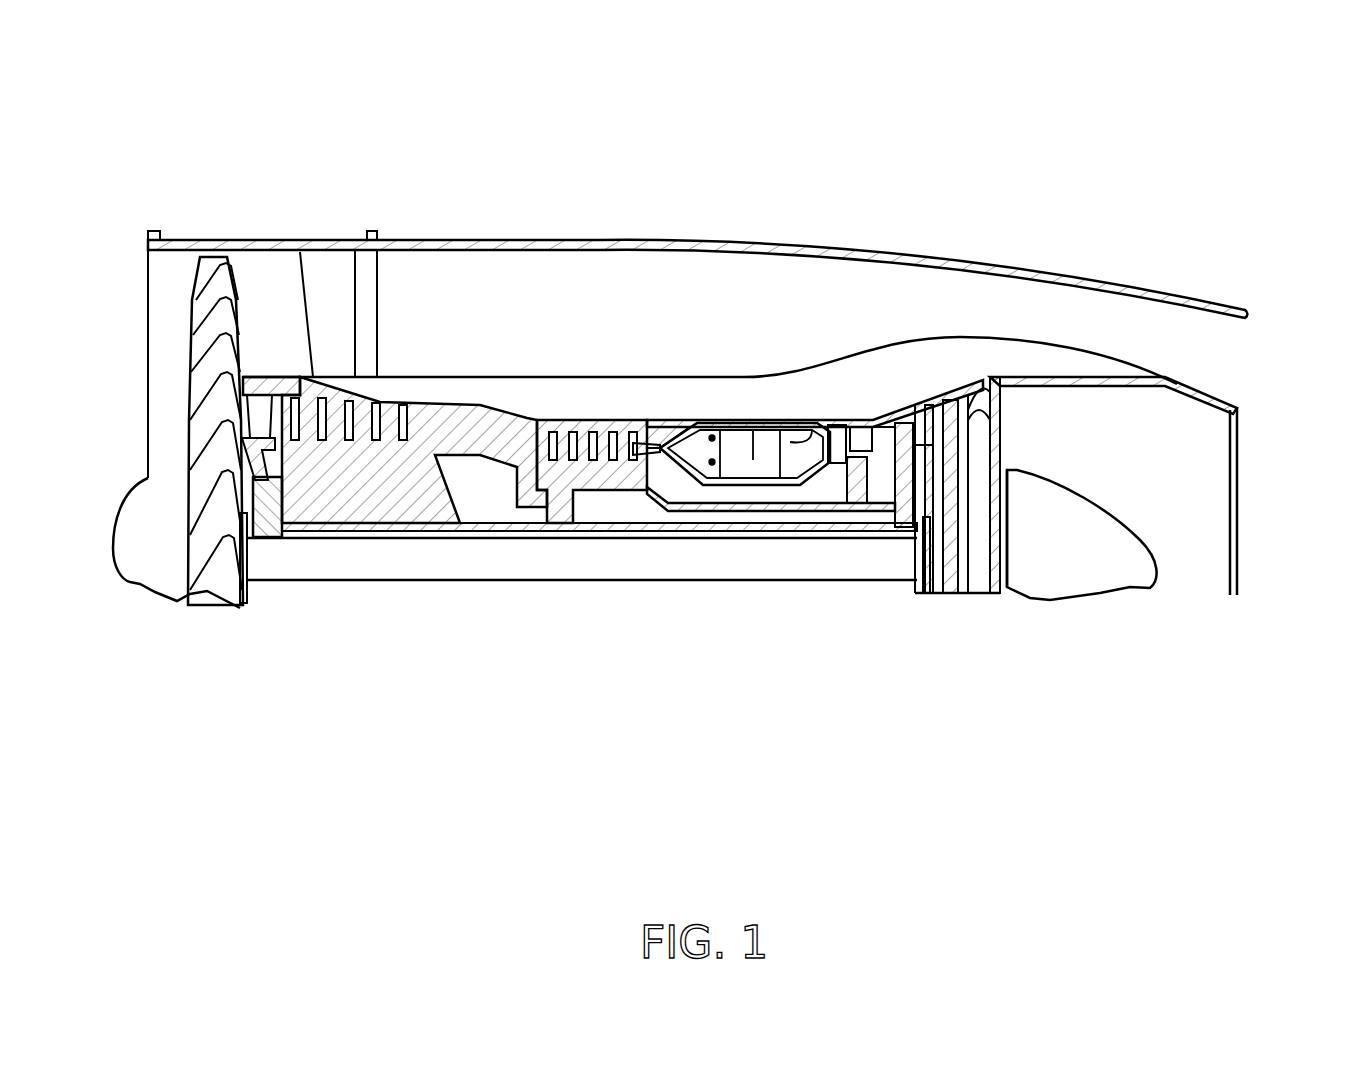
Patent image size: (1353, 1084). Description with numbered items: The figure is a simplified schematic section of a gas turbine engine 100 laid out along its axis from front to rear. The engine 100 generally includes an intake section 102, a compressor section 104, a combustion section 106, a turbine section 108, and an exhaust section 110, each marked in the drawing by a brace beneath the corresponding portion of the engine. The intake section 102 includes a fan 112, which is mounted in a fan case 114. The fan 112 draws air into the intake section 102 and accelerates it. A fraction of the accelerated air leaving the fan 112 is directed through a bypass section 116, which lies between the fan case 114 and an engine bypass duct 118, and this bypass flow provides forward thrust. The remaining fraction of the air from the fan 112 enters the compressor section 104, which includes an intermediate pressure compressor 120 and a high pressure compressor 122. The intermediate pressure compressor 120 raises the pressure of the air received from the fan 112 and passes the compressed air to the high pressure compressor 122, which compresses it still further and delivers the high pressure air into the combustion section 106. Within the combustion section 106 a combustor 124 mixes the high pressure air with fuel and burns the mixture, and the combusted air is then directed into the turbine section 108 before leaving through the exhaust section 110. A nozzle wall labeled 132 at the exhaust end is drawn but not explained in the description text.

The gas turbine engine 100 is at (423, 197).
The intake section 102 is at (255, 685).
The compressor section 104 is at (590, 685).
The combustion section 106 is at (800, 685).
The turbine section 108 is at (1005, 685).
The exhaust section 110 is at (1170, 685).
The fan 112 is at (200, 374).
The fan case 114 is at (276, 240).
The bypass section 116 is at (598, 265).
The engine bypass duct 118 is at (688, 377).
The intermediate pressure compressor 120 is at (368, 500).
The high pressure compressor 122 is at (598, 480).
The combustor 124 is at (788, 442).
The exhaust nozzle 132 is at (1210, 493).